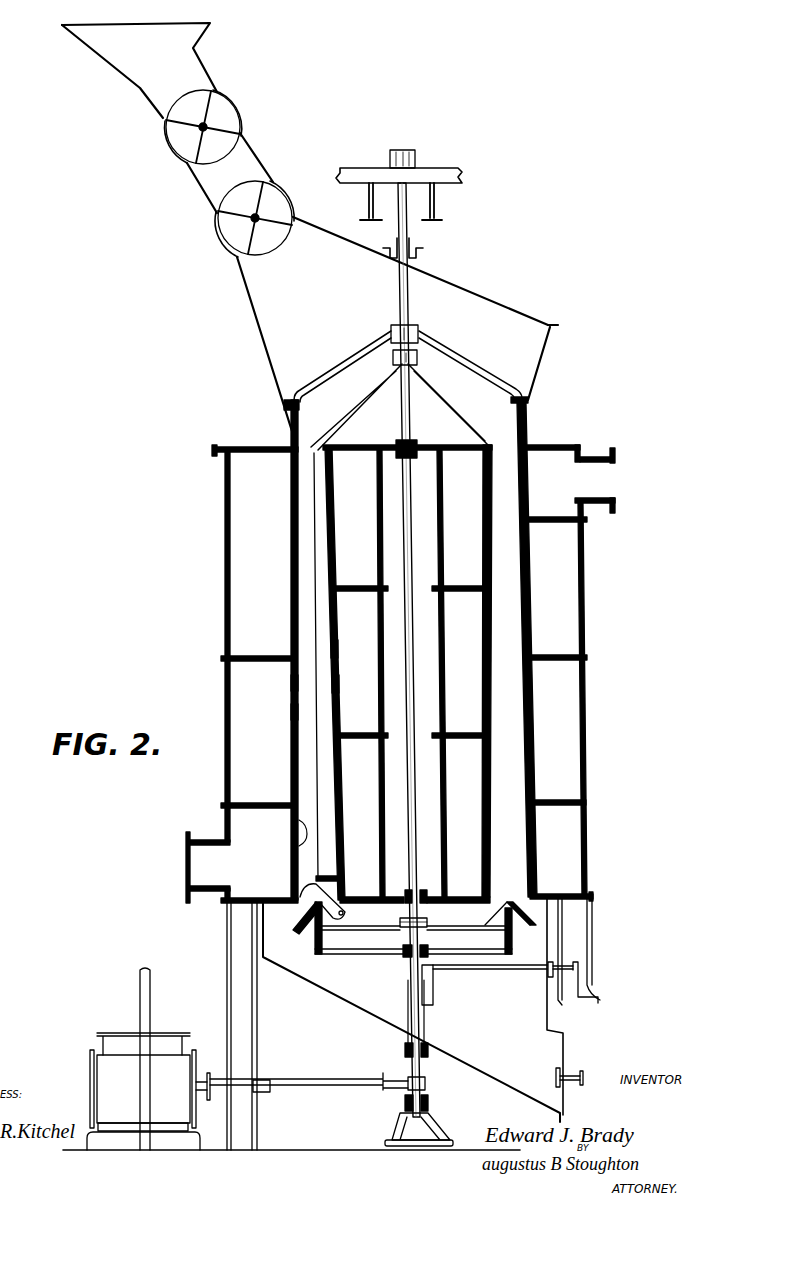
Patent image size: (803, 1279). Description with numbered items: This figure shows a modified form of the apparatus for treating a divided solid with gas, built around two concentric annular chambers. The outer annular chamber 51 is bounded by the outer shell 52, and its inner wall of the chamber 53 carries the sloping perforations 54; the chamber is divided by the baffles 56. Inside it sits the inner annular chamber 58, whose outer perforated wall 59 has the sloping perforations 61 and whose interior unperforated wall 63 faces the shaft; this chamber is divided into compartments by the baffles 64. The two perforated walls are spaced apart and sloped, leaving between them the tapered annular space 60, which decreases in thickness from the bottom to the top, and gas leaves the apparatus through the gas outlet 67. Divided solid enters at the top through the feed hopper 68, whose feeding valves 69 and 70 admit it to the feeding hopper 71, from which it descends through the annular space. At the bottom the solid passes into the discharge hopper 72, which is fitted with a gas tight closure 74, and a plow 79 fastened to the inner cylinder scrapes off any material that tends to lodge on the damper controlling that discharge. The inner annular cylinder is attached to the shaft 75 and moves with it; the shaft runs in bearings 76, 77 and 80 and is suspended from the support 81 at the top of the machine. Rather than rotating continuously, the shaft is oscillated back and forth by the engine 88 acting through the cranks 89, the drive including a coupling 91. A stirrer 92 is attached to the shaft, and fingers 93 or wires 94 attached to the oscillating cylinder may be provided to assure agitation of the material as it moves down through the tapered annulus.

The outer annular chamber 51 is at (263, 573).
The outer shell 52 is at (585, 605).
The inner wall of the chamber 53 is at (291, 683).
The sloping perforations 54 is at (292, 711).
The baffles 56 is at (262, 657).
The inner annular chamber 58 is at (359, 573).
The outer perforated wall 59 is at (339, 652).
The annular space 60 is at (307, 487).
The sloping perforations 61 is at (348, 683).
The interior unperforated wall 63 is at (378, 511).
The baffles 64 is at (350, 592).
The gas outlet 67 is at (612, 480).
The feed hopper 68 is at (112, 58).
The feeding valve 69 is at (178, 135).
The feeding valve 70 is at (218, 224).
The feeding hopper 71 is at (262, 330).
The discharge hopper 72 is at (360, 1006).
The gas tight closure 74 is at (565, 1058).
The shaft 75 is at (408, 530).
The bearing 76 is at (420, 328).
The bearing 77 is at (432, 1103).
The plow 79 is at (300, 888).
The bearing 80 is at (416, 158).
The support 81 is at (462, 178).
The engine 88 is at (93, 1053).
The cranks 89 is at (376, 1090).
The coupling 91 is at (428, 921).
The stirrer 92 is at (348, 410).
The fingers 93 is at (300, 845).
The wires 94 is at (317, 792).